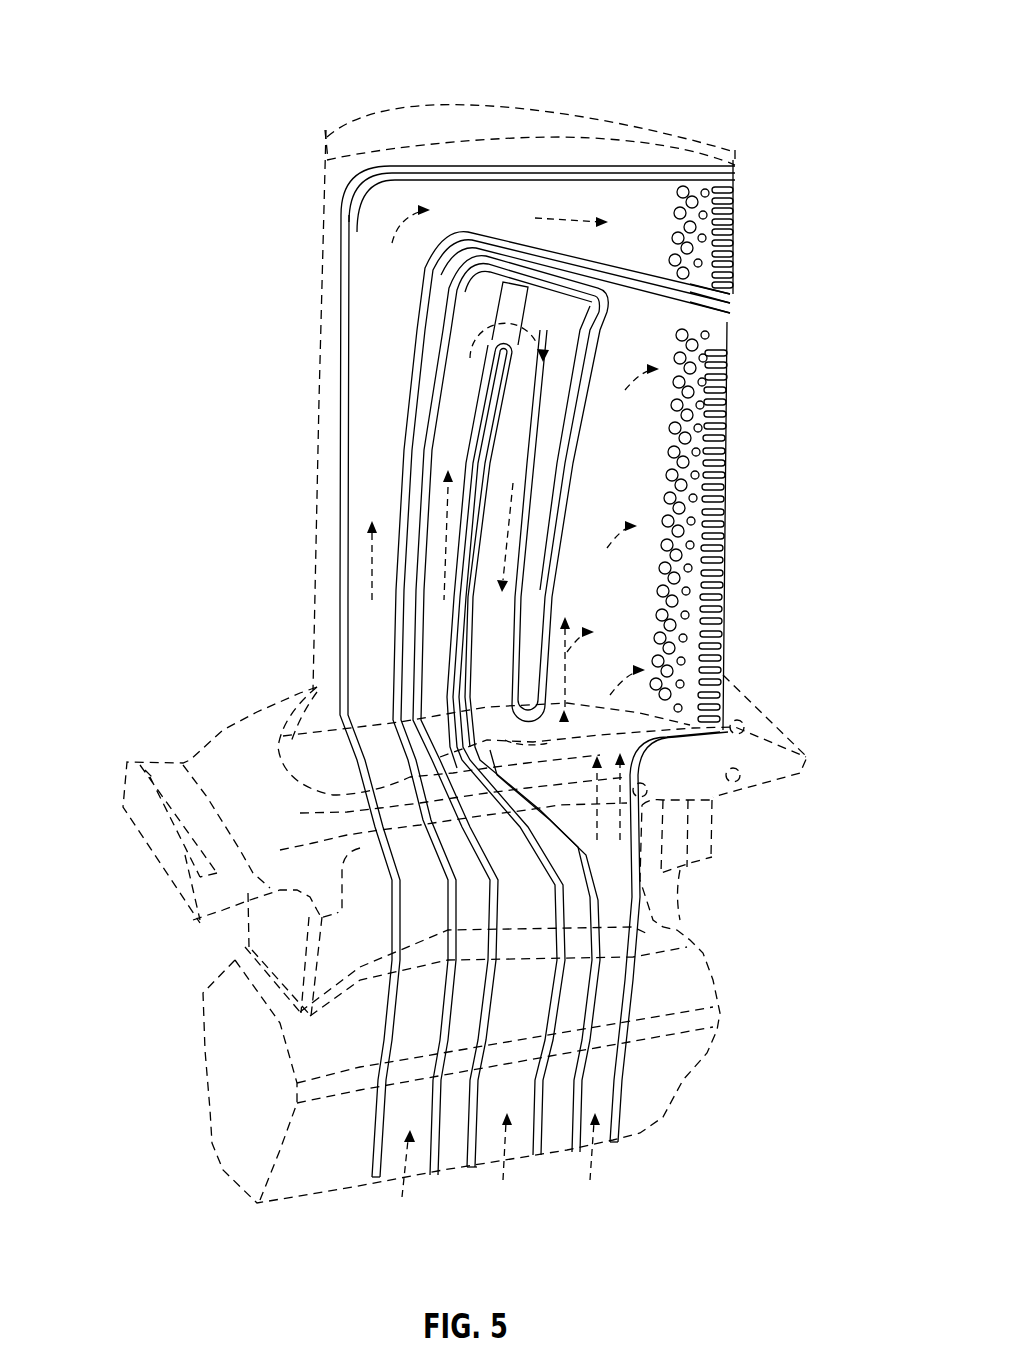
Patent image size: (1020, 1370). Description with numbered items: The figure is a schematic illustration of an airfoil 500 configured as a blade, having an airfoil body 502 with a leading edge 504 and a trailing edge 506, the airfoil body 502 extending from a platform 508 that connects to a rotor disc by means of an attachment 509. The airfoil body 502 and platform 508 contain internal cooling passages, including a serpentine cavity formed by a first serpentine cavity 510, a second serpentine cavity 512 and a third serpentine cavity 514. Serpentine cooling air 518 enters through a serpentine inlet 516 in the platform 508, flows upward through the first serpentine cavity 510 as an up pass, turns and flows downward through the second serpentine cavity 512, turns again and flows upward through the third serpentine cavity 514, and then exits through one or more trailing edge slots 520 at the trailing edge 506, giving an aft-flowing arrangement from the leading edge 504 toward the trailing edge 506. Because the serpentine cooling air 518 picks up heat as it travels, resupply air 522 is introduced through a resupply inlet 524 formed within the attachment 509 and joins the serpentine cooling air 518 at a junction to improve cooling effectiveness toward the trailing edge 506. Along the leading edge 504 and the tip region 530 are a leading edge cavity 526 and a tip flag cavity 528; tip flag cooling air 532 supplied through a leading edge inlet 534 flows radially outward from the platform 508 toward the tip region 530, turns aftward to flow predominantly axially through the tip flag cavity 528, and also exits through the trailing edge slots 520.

The airfoil 500 is at (362, 48).
The tip region 530 is at (318, 160).
The airfoil body 502 is at (316, 325).
The leading edge 504 is at (320, 500).
The trailing edge 506 is at (733, 318).
The platform 508 is at (140, 818).
The attachment 509 is at (230, 1068).
The first serpentine cavity 510 is at (483, 378).
The second serpentine cavity 512 is at (554, 425).
The third serpentine cavity 514 is at (642, 453).
The serpentine inlet 516 is at (514, 1222).
The serpentine cooling air 518 is at (504, 1152).
The trailing edge slots 520 is at (720, 645).
The resupply air 522 is at (586, 1183).
The resupply inlet 524 is at (593, 1220).
The leading edge cavity 526 is at (735, 224).
The tip flag cavity 528 is at (662, 222).
The tip flag cooling air 532 is at (407, 1172).
The leading edge inlet 534 is at (397, 1238).